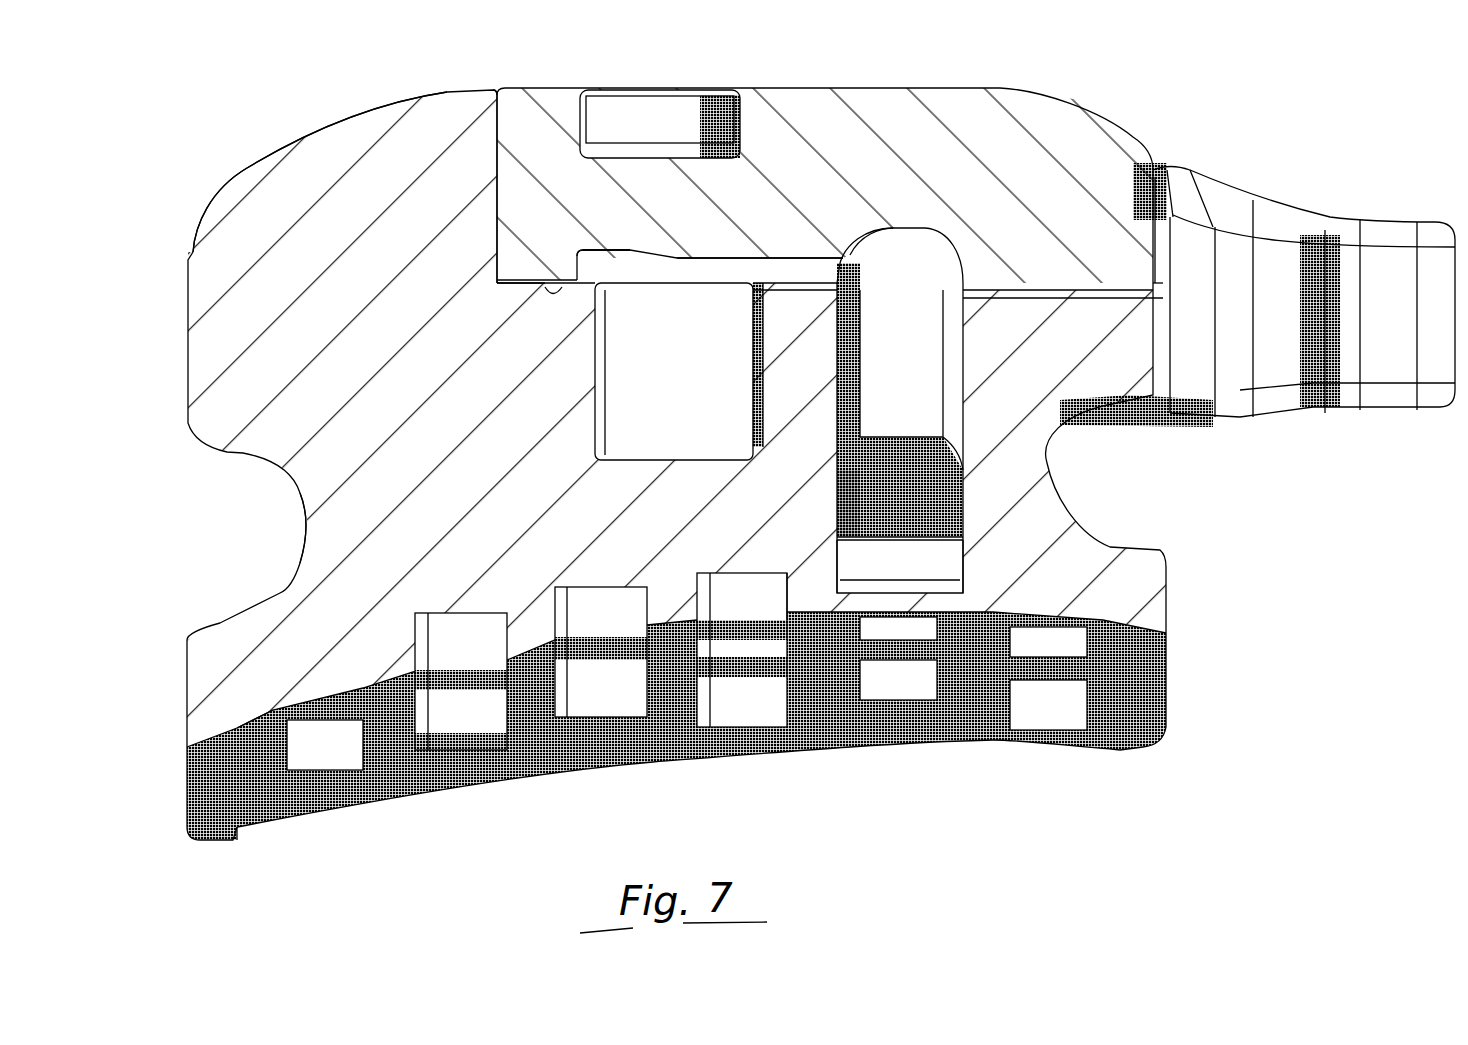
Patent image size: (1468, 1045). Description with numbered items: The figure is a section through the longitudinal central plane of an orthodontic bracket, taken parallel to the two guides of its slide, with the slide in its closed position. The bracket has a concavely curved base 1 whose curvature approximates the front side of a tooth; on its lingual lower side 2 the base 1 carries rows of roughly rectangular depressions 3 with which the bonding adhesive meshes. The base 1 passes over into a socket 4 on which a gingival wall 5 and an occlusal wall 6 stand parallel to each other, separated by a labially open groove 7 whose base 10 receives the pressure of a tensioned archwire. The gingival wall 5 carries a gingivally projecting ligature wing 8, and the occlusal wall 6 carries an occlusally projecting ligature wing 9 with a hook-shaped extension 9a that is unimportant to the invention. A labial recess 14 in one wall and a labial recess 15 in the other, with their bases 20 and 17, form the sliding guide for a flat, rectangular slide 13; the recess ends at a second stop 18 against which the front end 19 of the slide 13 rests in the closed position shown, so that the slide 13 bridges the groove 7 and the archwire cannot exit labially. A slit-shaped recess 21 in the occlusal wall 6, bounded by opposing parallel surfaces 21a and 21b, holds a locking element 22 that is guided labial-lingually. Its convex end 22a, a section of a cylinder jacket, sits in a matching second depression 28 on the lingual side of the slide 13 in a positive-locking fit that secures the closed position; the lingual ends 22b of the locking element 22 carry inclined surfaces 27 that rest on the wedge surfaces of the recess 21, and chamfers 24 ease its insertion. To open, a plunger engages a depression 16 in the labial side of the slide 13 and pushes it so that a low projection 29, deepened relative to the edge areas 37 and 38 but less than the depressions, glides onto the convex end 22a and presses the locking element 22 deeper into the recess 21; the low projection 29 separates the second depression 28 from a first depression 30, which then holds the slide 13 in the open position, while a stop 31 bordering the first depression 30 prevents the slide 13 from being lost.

The base 1 is at (203, 795).
The lower side 2 is at (853, 320).
The depressions 3 is at (427, 763).
The socket 4 is at (203, 695).
The gingival wall 5 is at (445, 478).
The occlusal wall 6 is at (800, 509).
The groove 7 is at (607, 412).
The ligature wing 8 is at (209, 213).
The ligature wing 9 is at (1189, 192).
The hook-shaped extension 9a is at (1402, 254).
The base of the groove 10 is at (637, 453).
The slide 13 is at (540, 115).
The labial recess 14 is at (1155, 286).
The labial recess 15 is at (526, 290).
The depression 16 is at (646, 155).
The base of the recess 17 is at (542, 299).
The second stop 18 is at (489, 170).
The front end 19 is at (501, 126).
The base of the recess 20 is at (1113, 302).
The slit-shaped recess 21 is at (880, 578).
The surface 21a is at (831, 567).
The surface 21b is at (963, 564).
The locking element 22 is at (928, 383).
The convex end 22a is at (924, 242).
The lingual ends 22b is at (942, 537).
The chamfers 24 is at (1032, 281).
The inclined surfaces 27 is at (888, 470).
The second depression 28 is at (868, 233).
The low projection 29 is at (739, 257).
The first depression 30 is at (633, 254).
The stop 31 is at (574, 262).
The edge area 37 is at (576, 262).
The edge area 38 is at (1159, 175).